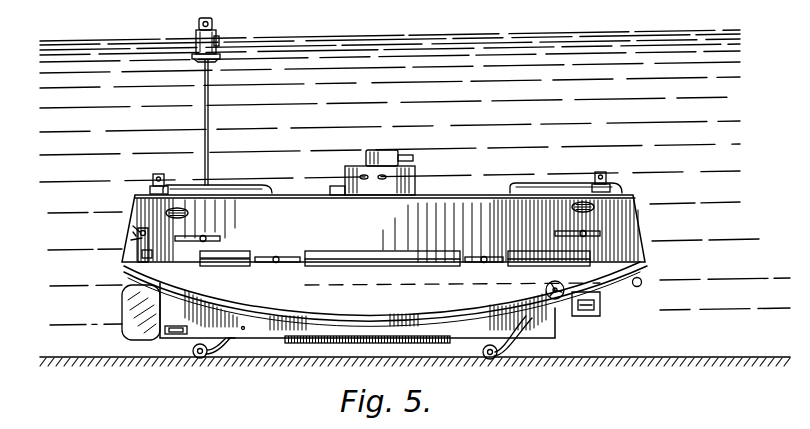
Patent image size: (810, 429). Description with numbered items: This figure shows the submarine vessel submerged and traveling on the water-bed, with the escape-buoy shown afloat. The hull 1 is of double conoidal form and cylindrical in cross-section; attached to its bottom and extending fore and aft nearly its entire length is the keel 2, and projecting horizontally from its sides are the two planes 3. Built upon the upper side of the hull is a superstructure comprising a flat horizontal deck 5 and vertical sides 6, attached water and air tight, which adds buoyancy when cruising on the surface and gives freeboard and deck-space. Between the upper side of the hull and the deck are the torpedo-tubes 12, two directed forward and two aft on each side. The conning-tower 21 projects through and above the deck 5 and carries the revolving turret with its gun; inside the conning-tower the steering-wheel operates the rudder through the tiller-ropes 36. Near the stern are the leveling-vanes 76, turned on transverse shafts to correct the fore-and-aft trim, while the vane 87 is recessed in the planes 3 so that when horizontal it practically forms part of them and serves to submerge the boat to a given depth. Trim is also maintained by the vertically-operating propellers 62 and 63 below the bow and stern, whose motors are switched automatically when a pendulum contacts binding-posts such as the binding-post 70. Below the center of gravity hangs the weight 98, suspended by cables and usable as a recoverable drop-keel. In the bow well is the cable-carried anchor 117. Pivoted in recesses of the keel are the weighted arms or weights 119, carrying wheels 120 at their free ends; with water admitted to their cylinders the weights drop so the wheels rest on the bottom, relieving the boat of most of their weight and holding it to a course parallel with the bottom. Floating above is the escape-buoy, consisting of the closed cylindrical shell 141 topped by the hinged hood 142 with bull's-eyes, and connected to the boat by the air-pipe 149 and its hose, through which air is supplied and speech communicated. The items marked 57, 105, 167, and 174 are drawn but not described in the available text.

The hull 1 is at (385, 294).
The keel 2 is at (469, 314).
The planes 3 is at (397, 262).
The deck 5 is at (462, 195).
The vertical sides 6 is at (418, 214).
The torpedo-tubes 12 is at (188, 213).
The conning-tower 21 is at (372, 173).
The tiller-ropes 36 is at (484, 250).
The stern casing 57 is at (141, 312).
The vertically-operating propeller 62 is at (590, 316).
The vertically-operating propeller 63 is at (177, 319).
The binding-post 70 is at (137, 244).
The leveling-vanes 76 is at (206, 236).
The vane 87 is at (276, 256).
The weight 98 is at (395, 343).
The propeller 105 is at (559, 283).
The anchor 117 is at (641, 285).
The weights 119 is at (222, 350).
The wheels 120 is at (193, 351).
The closed cylindrical shell 141 is at (196, 34).
The hood 142 is at (212, 24).
The air-pipe 149 is at (209, 114).
The stanchion 167 is at (158, 174).
The deck tube 174 is at (236, 180).